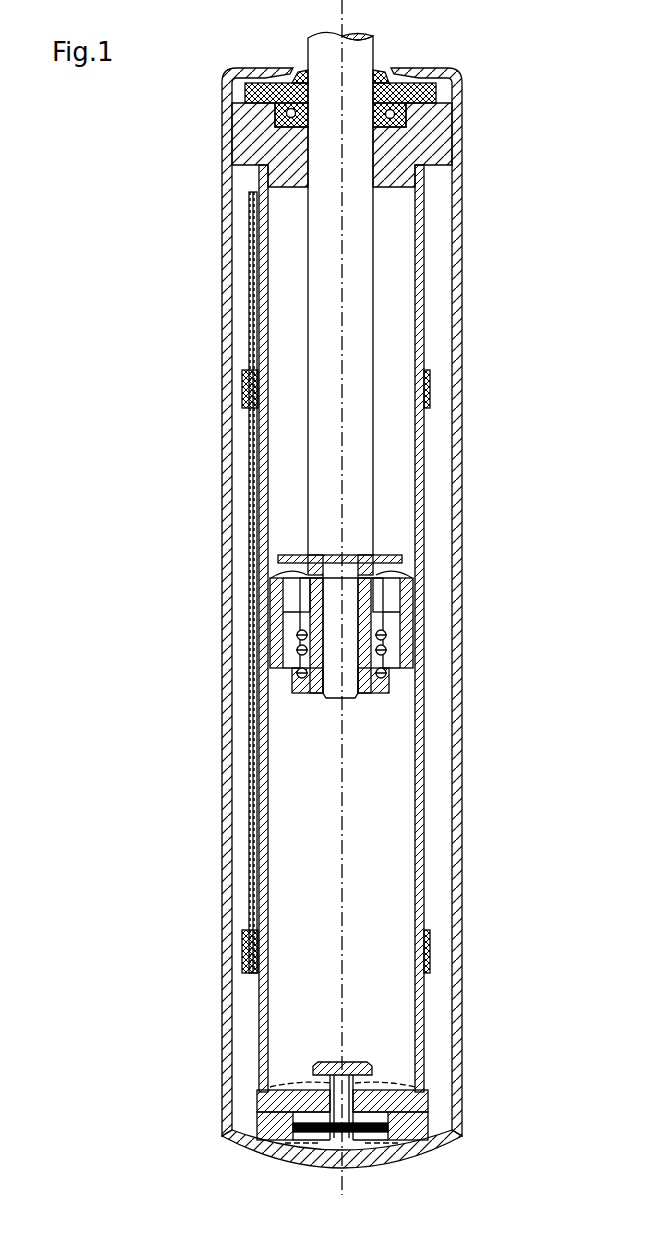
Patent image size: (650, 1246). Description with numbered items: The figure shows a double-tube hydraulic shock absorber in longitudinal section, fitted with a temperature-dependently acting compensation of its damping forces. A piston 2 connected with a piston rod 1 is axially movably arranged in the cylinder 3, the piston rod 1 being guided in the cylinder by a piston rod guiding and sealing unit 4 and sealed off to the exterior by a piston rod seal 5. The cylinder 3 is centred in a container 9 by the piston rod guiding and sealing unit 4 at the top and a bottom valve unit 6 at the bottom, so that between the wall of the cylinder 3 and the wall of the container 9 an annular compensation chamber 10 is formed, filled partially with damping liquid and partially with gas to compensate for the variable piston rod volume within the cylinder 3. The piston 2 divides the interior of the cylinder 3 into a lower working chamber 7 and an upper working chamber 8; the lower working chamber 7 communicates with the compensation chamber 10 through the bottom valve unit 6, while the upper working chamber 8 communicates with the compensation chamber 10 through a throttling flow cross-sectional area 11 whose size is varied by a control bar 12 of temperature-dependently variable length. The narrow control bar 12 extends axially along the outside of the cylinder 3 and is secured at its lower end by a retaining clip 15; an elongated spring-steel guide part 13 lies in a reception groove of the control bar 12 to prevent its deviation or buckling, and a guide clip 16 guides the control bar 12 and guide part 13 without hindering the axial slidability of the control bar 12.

The piston rod 1 is at (360, 308).
The piston 2 is at (388, 626).
The cylinder 3 is at (263, 755).
The piston rod guiding and sealing unit 4 is at (290, 150).
The piston rod seal 5 is at (398, 112).
The bottom valve unit 6 is at (436, 1125).
The lower working chamber 7 is at (378, 833).
The upper working chamber 8 is at (287, 306).
The container 9 is at (458, 443).
The compensation chamber 10 is at (228, 433).
The throttling flow cross-sectional area 11 is at (287, 187).
The control bar 12 is at (253, 468).
The guide part 13 is at (253, 502).
The retaining clip 15 is at (248, 950).
The guide clip 16 is at (250, 390).